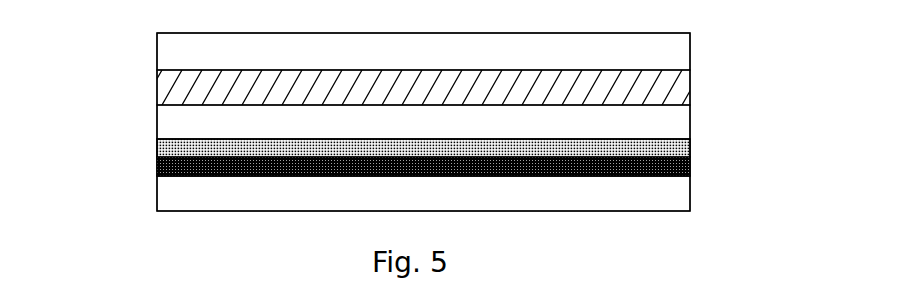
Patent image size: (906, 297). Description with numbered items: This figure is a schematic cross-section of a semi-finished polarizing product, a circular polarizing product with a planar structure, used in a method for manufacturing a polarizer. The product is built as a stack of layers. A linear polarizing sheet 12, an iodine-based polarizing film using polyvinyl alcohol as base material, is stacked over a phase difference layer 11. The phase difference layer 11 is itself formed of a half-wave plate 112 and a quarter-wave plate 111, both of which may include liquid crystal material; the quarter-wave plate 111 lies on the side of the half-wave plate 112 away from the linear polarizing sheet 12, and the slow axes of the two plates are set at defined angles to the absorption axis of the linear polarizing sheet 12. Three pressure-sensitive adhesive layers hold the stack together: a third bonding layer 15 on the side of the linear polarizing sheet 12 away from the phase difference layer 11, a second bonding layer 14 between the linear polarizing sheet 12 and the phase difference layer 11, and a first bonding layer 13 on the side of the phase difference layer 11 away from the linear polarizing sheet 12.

The phase difference layer 11 is at (63, 152).
The quarter-wave plate 111 is at (157, 168).
The half-wave plate 112 is at (157, 142).
The linear polarizing sheet 12 is at (690, 88).
The first bonding layer 13 is at (690, 194).
The second bonding layer 14 is at (690, 121).
The third bonding layer 15 is at (690, 51).